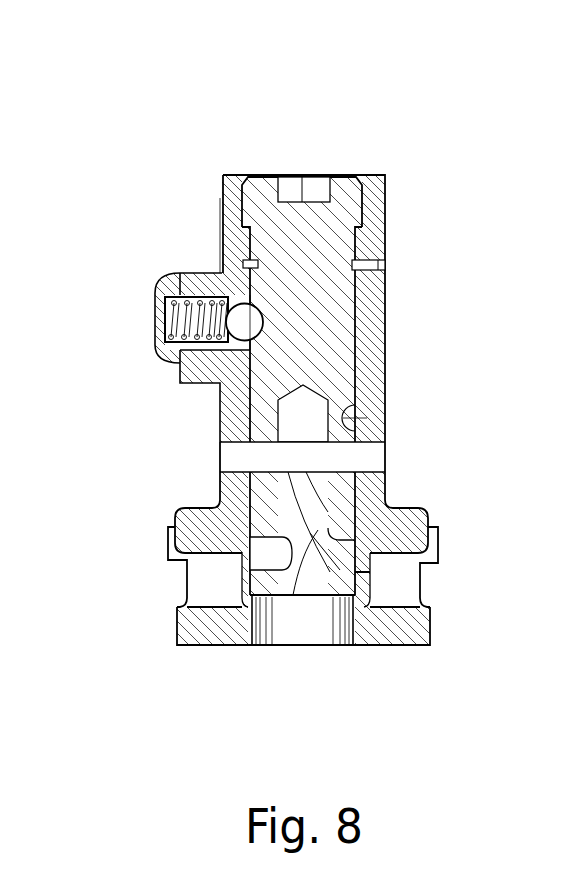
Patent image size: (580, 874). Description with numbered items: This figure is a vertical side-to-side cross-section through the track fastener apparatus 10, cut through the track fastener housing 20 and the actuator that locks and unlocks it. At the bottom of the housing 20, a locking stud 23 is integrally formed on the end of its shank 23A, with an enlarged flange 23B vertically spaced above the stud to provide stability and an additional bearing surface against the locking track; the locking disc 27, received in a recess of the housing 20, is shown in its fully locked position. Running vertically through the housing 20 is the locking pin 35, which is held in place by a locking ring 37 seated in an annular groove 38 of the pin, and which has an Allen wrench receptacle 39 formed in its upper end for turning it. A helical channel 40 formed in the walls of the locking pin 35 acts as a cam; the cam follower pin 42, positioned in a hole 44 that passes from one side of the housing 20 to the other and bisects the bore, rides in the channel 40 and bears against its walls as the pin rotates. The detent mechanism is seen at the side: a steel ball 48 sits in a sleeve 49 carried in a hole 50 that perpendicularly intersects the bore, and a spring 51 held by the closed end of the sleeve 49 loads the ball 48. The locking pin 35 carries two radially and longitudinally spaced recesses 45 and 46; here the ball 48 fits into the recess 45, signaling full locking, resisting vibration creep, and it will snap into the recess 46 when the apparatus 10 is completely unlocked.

The track fastener apparatus 10 is at (465, 142).
The track fastener housing 20 is at (372, 380).
The locking stud 23 is at (407, 633).
The shank 23A is at (392, 570).
The enlarged flange 23B is at (417, 517).
The locking disc 27 is at (302, 640).
The locking pin 35 is at (263, 185).
The locking ring 37 is at (387, 277).
The annular groove 38 is at (387, 265).
The Allen wrench receptacle 39 is at (313, 185).
The helical channel 40 is at (300, 600).
The cam follower pin 42 is at (363, 457).
The hole 44 is at (257, 446).
The recess 45 is at (263, 318).
The recess 46 is at (345, 419).
The steel ball 48 is at (205, 275).
The sleeve 49 is at (163, 365).
The hole 50 is at (215, 350).
The spring 51 is at (228, 322).